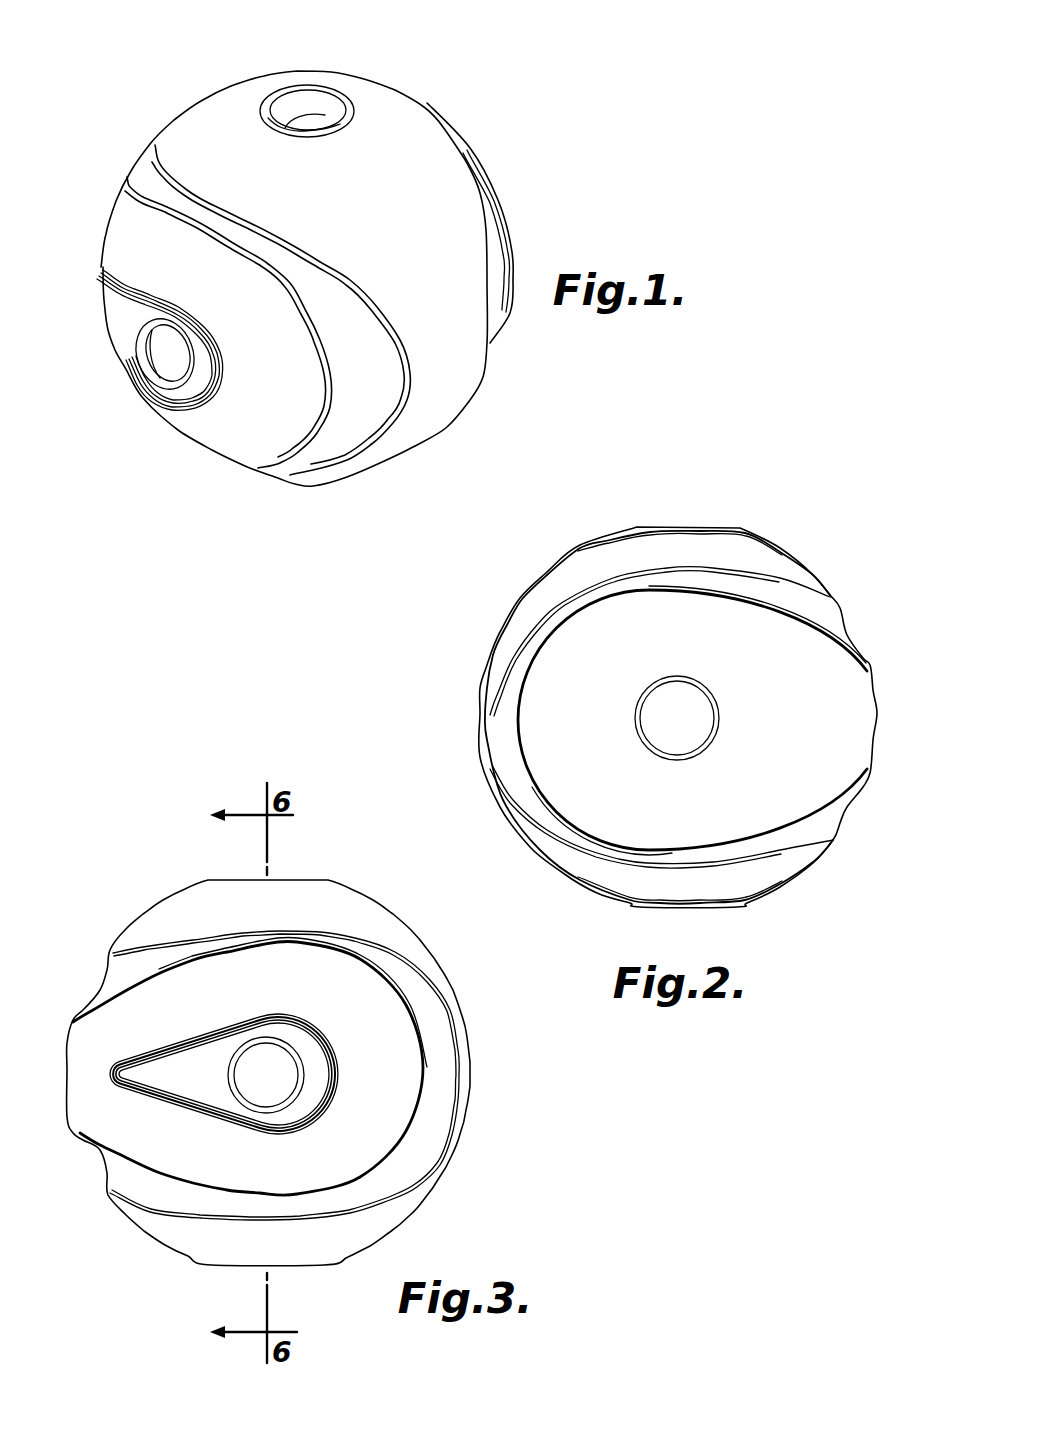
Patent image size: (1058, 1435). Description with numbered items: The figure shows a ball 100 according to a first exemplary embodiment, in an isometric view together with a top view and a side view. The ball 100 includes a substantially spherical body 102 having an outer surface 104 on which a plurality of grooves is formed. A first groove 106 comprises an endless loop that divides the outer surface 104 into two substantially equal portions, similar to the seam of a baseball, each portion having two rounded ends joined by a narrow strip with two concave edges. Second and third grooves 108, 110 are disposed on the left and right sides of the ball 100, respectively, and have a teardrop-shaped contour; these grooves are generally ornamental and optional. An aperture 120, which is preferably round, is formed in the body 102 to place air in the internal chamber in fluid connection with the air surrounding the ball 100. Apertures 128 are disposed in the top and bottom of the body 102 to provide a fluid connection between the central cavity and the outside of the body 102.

In FIG. 1, the ball 100 is at (522, 178).
In FIG. 2, the ball 100 is at (826, 535).
In FIG. 3, the ball 100 is at (372, 884).
In FIG. 1, the substantially spherical body 102 is at (107, 217).
In FIG. 2, the substantially spherical body 102 is at (517, 600).
In FIG. 3, the substantially spherical body 102 is at (398, 927).
In FIG. 1, the outer surface 104 is at (452, 383).
In FIG. 3, the outer surface 104 is at (170, 913).
In FIG. 1, the first groove 106 is at (340, 443).
In FIG. 2, the first groove 106 is at (787, 837).
In FIG. 3, the first groove 106 is at (403, 986).
In FIG. 2, the second groove 108 is at (743, 527).
In FIG. 1, the third groove 110 is at (178, 410).
In FIG. 2, the third groove 110 is at (740, 903).
In FIG. 3, the third groove 110 is at (327, 1044).
In FIG. 1, the aperture 120 is at (153, 370).
In FIG. 3, the aperture 120 is at (297, 1096).
In FIG. 1, the apertures 128 is at (310, 88).
In FIG. 2, the apertures 128 is at (636, 714).